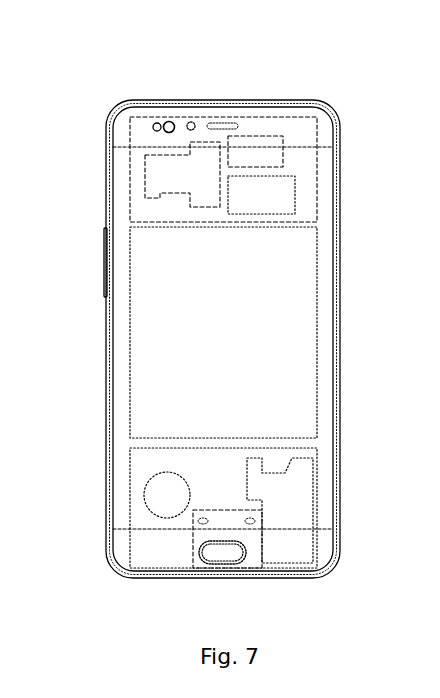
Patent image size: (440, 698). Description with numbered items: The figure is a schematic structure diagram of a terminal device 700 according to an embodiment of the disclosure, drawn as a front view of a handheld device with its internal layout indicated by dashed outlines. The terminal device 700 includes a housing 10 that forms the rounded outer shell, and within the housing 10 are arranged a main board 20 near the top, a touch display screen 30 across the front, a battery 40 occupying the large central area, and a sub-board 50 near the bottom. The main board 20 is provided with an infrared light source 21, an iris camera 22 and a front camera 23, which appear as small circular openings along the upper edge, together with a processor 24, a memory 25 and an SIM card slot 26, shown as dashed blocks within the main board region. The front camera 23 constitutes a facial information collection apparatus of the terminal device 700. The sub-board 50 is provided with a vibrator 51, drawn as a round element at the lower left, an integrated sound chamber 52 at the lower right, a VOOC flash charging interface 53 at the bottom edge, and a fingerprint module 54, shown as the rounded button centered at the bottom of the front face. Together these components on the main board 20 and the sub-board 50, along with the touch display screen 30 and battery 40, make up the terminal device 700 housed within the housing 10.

The terminal device 700 is at (63, 50).
The housing 10 is at (330, 112).
The main board 20 is at (317, 170).
The infrared light source 21 is at (155, 123).
The iris camera 22 is at (169, 121).
The front camera 23 is at (195, 122).
The processor 24 is at (247, 135).
The memory 25 is at (295, 197).
The SIM card slot 26 is at (145, 158).
The touch display screen 30 is at (325, 310).
The battery 40 is at (277, 277).
The sub-board 50 is at (317, 450).
The vibrator 51 is at (138, 495).
The integrated sound chamber 52 is at (298, 485).
The VOOC flash charging interface 53 is at (252, 580).
The fingerprint module 54 is at (197, 560).